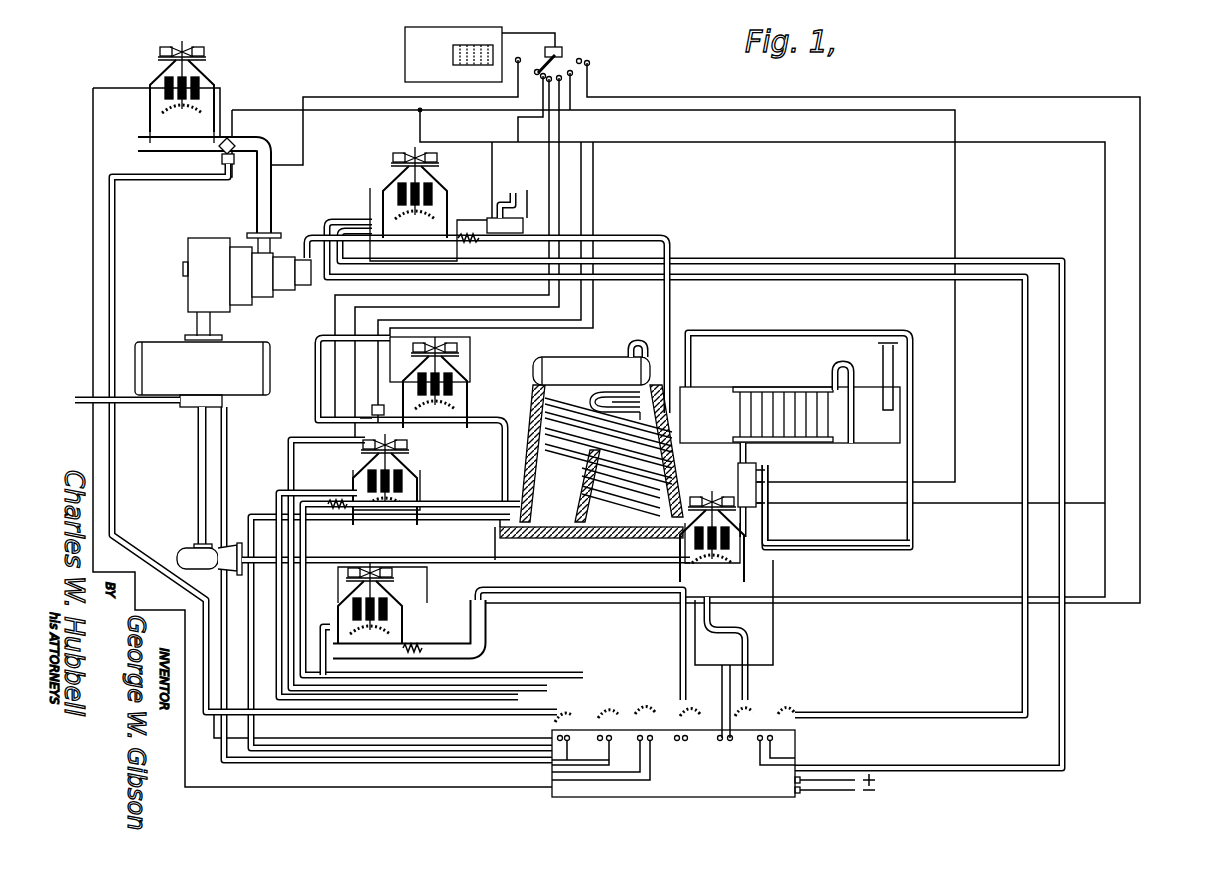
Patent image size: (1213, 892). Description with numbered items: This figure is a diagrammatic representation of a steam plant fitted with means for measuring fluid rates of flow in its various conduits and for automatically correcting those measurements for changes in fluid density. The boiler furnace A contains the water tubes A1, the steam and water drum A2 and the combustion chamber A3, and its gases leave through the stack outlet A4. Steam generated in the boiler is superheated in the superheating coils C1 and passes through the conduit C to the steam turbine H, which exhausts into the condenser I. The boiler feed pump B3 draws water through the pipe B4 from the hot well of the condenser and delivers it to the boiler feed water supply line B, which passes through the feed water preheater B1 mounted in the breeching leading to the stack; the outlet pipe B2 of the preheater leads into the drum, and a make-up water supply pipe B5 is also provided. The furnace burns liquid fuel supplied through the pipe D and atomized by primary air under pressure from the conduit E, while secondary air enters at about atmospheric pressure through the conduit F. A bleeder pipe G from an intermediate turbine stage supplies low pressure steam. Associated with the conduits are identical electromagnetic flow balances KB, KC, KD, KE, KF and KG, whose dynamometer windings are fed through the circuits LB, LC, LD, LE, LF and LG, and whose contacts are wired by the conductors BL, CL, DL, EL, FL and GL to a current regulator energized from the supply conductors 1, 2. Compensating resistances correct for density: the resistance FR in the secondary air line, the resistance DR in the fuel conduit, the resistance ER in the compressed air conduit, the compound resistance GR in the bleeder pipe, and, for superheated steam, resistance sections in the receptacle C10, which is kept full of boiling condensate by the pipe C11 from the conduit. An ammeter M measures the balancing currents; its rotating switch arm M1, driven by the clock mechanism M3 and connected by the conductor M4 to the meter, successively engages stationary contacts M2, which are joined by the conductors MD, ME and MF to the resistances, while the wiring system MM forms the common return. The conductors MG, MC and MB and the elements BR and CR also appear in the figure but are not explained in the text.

The ammeter M is at (443, 16).
The rotating switch arm M1 is at (565, 66).
The stationary contacts M2 is at (585, 62).
The clock mechanism M3 is at (556, 48).
The conductor M4 is at (535, 33).
The generator circuit wire MG is at (303, 138).
The wiring system MM is at (452, 142).
The controller wire MC is at (518, 128).
The conductor MD is at (549, 160).
The conductor ME is at (581, 168).
The conductor MF is at (828, 104).
The wire MB is at (893, 112).
The electromagnetic flow balance KG is at (193, 92).
The compensating resistance GR is at (222, 156).
The bleeder pipe G is at (272, 200).
The conductors GL is at (120, 228).
The steam turbine H is at (285, 285).
The condenser I is at (202, 374).
The make-up water supply pipe B5 is at (152, 405).
The pipe B4 is at (198, 466).
The boiler feed pump B3 is at (187, 546).
The boiler feed water supply line B is at (437, 558).
The feed water preheater B1 is at (733, 412).
The outlet pipe B2 is at (912, 442).
The regulator BR is at (738, 478).
The electromagnetic flow balance KB is at (708, 536).
The conductors BL is at (746, 630).
The circuit LB is at (720, 665).
The conductors CL is at (355, 222).
The conduit C is at (666, 322).
The electromagnetic flow balance KC is at (446, 204).
The resistance CR is at (470, 243).
The receptacle C10 is at (515, 234).
The pipe C11 is at (530, 198).
The superheating coils C1 is at (592, 397).
The boiler furnace A is at (533, 392).
The water tubes A1 is at (612, 488).
The steam and water drum A2 is at (591, 364).
The combustion chamber A3 is at (545, 522).
The stack outlet A4 is at (880, 352).
The conduit E is at (500, 447).
The electromagnetic flow balance KE is at (462, 349).
The resistance ER is at (365, 418).
The conductors EL is at (283, 450).
The electromagnetic flow balance KD is at (410, 453).
The conductors DL is at (312, 493).
The pipe D is at (450, 504).
The compensating resistance DR is at (345, 508).
The electromagnetic flow balance KF is at (382, 607).
The conduit F is at (488, 620).
The resistance FR is at (410, 650).
The conductors FL is at (590, 675).
The circuit LF is at (558, 596).
The dynamometer circuit LG is at (435, 747).
The circuit LD is at (600, 752).
The dynamometer circuit LE is at (645, 772).
The dynamometer circuit LC is at (930, 773).
The supply conductor 1 is at (805, 779).
The supply conductor 2 is at (822, 789).